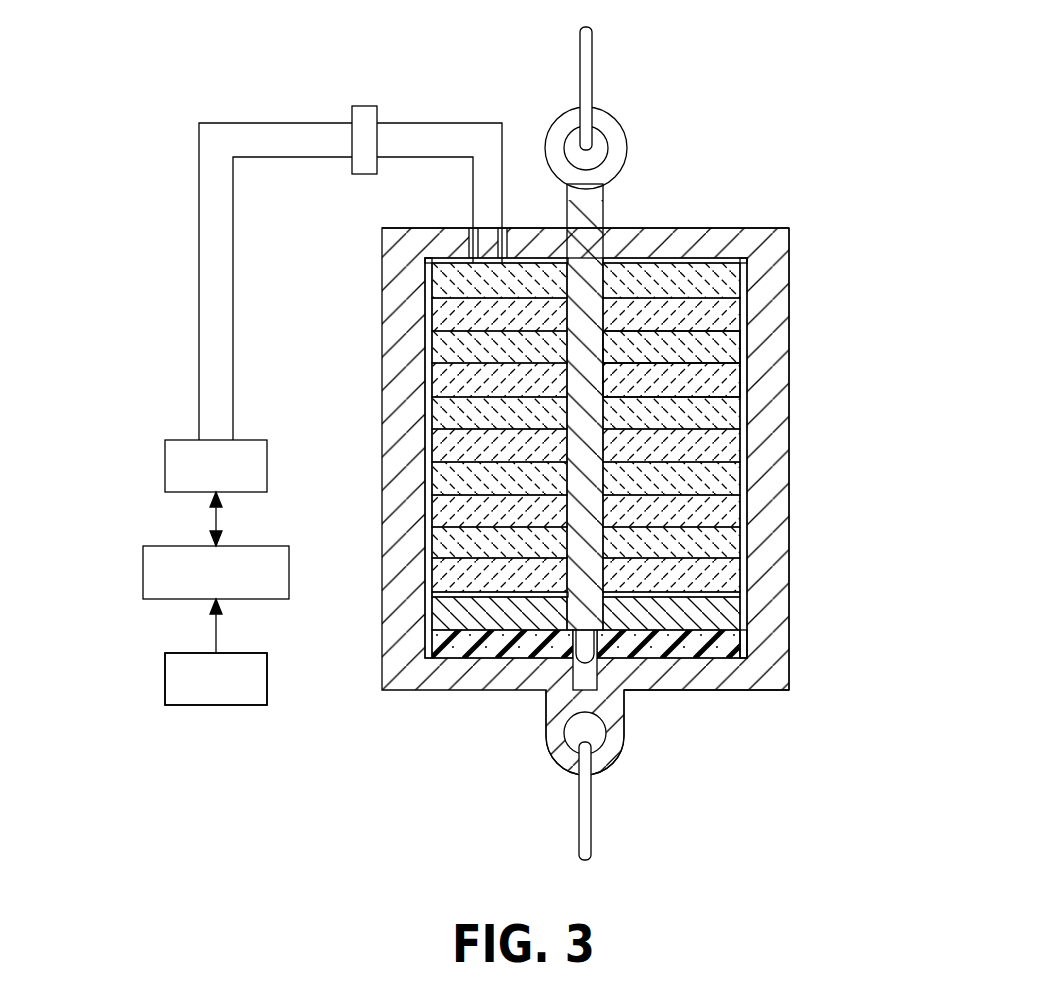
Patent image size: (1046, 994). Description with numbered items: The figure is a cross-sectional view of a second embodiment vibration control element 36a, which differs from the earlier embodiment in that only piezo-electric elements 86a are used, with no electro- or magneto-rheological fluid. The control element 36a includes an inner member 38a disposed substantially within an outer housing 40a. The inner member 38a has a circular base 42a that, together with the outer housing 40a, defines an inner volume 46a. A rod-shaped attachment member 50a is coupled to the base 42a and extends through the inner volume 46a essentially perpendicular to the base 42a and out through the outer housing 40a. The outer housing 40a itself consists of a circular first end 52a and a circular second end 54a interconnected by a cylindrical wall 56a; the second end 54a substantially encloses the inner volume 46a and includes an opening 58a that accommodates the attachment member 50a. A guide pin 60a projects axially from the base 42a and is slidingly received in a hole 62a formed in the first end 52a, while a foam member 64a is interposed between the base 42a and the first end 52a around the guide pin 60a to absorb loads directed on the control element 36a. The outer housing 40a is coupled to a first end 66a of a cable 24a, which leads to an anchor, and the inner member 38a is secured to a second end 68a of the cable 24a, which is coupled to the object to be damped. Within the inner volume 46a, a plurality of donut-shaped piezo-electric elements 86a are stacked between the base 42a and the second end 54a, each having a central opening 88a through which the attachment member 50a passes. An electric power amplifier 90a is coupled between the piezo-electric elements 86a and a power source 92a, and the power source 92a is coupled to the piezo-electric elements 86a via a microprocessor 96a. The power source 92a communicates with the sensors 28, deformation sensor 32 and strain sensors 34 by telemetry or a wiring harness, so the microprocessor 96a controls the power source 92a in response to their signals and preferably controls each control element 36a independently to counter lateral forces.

The cable 24a is at (592, 50).
The second end of the cable 68a is at (592, 90).
The opening 58a is at (608, 228).
The vibration control element 36a is at (762, 70).
The electric power amplifier 90a is at (366, 108).
The power source 92a is at (170, 447).
The microprocessor 96a is at (150, 553).
The sensors 28 is at (168, 657).
The deformation sensor 32 is at (156, 666).
The strain sensors 34 is at (156, 666).
The second end 54a is at (770, 240).
The cylindrical wall 56a is at (778, 288).
The outer housing 40a is at (777, 538).
The first end 52a is at (772, 660).
The inner volume 46a is at (742, 510).
The foam member 64a is at (723, 643).
The attachment member 50a is at (583, 437).
The central opening 88a is at (610, 357).
The piezo-electric elements 86a is at (730, 382).
The inner member 38a is at (732, 607).
The base 42a is at (730, 622).
The guide pin 60a is at (588, 678).
The hole 62a is at (622, 692).
The first end of the cable 66a is at (592, 805).